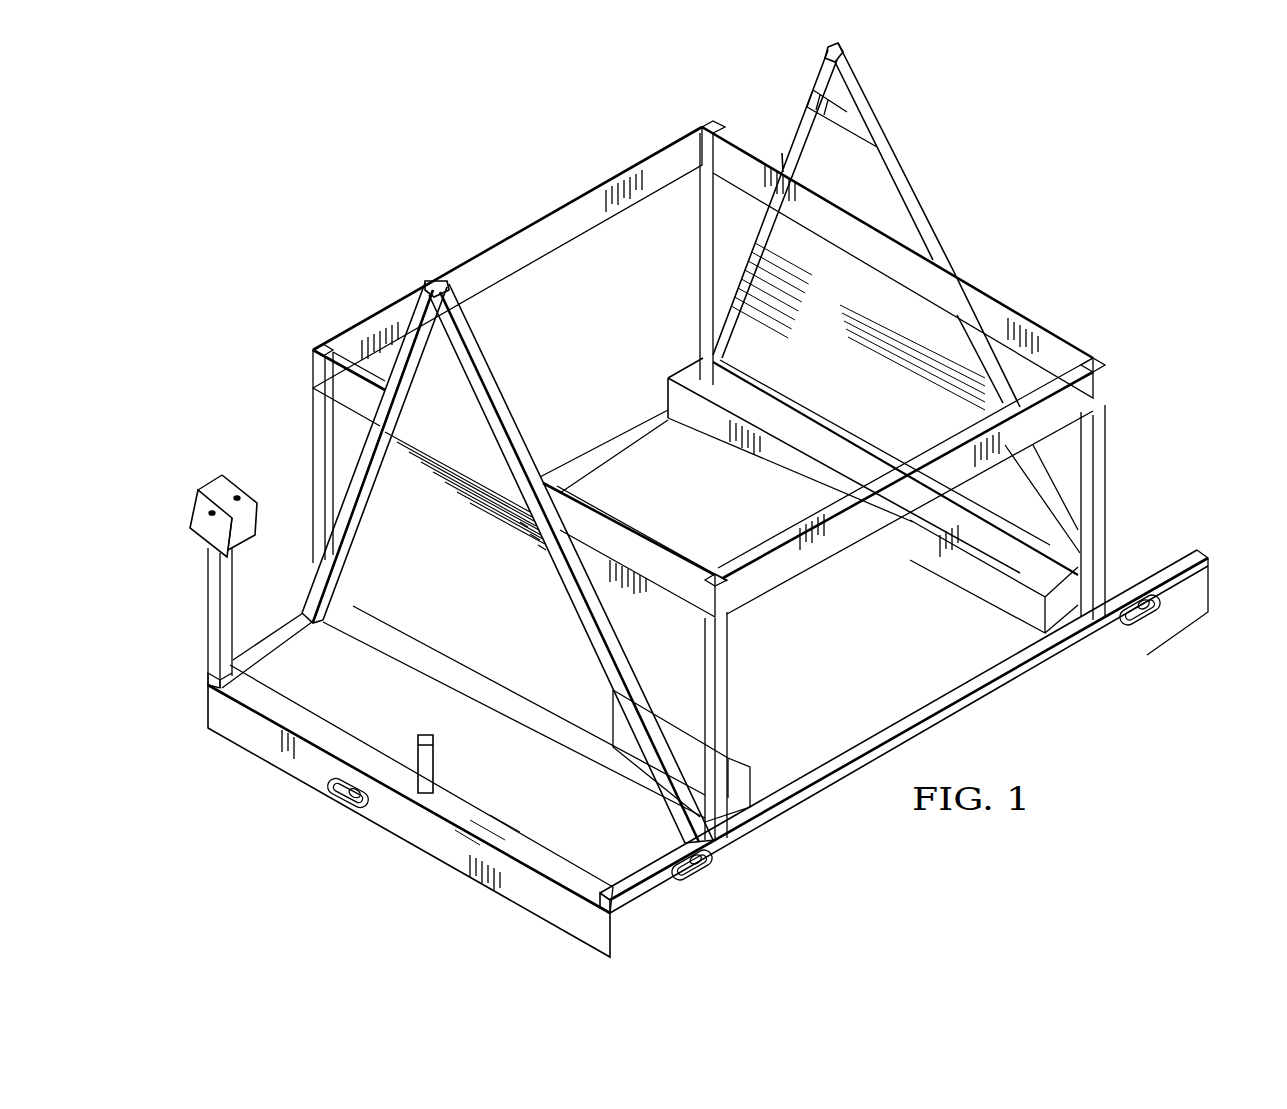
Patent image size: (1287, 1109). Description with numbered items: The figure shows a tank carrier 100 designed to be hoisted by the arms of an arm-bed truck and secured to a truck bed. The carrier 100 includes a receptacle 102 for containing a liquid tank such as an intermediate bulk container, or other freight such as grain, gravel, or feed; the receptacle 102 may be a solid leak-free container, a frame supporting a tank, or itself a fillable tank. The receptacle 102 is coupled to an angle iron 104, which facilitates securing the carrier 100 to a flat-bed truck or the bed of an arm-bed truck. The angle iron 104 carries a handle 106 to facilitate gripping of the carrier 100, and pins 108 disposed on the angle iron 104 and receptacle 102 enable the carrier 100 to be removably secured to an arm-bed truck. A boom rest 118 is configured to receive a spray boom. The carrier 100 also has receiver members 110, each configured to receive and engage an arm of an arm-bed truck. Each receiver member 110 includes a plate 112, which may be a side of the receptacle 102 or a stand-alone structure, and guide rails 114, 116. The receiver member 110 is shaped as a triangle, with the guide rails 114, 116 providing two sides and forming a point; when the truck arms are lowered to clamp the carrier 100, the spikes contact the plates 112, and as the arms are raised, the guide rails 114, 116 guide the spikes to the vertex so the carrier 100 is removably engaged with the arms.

The carrier 100 is at (233, 112).
The receptacle 102 is at (566, 272).
The angle iron 104 is at (245, 740).
The handle 106 is at (436, 752).
The pin 108 is at (352, 805).
The receiver member 110 is at (428, 275).
The plate 112 is at (400, 492).
The guide rail 114 is at (355, 538).
The guide rail 116 is at (560, 577).
The boom rest 118 is at (205, 530).